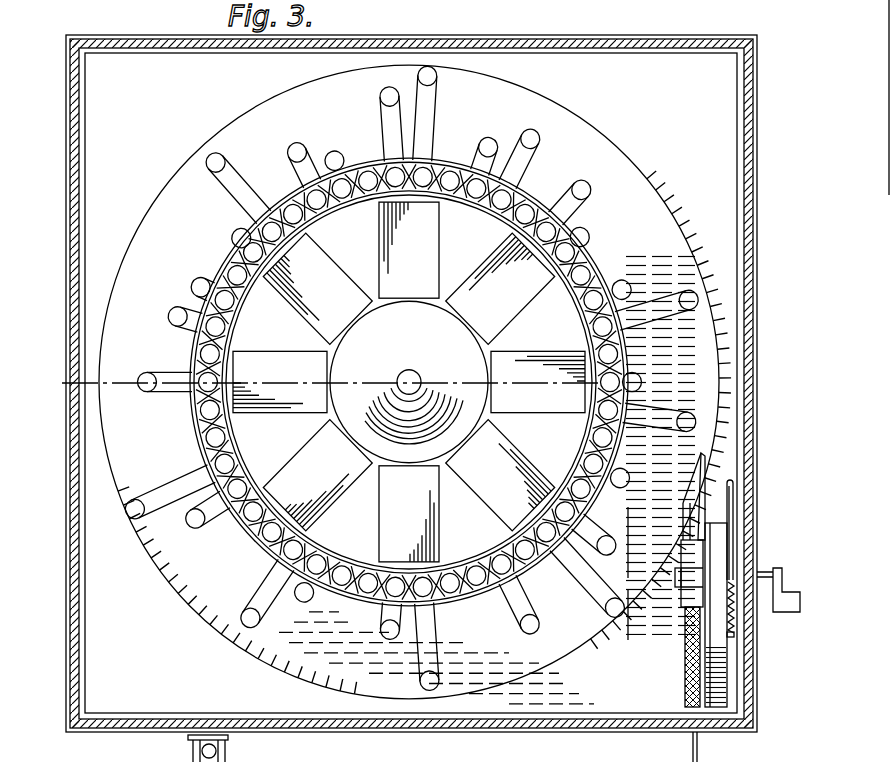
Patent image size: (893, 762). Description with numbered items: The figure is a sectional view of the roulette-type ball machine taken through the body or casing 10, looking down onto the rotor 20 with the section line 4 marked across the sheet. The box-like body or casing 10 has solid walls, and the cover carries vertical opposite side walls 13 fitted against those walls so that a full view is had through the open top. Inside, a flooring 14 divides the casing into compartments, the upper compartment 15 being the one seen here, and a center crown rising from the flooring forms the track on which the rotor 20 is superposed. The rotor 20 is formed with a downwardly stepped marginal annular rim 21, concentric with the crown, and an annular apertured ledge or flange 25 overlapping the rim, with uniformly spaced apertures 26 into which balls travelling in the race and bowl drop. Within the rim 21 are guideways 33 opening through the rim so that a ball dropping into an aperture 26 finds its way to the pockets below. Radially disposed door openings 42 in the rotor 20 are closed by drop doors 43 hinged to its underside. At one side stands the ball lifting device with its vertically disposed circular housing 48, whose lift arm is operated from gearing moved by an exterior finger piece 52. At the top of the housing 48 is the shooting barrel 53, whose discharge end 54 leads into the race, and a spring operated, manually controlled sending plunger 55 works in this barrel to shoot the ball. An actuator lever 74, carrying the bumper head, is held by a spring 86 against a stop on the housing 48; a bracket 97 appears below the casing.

The section line 4- 4 is at (786, 713).
The box like body or casing 10 is at (757, 132).
The vertical opposite side walls 13 is at (746, 277).
The flooring 14 is at (365, 658).
The upper compartment 15 is at (86, 673).
The rotor 20 is at (409, 381).
The marginal circular or annular rim 21 is at (412, 382).
The annular apertured ledge or flange 25 is at (409, 380).
The apertures 26 is at (399, 382).
The guideways 33 is at (411, 378).
The door openings 42 is at (413, 384).
The drop doors 43 is at (409, 382).
The circular housing 48 is at (715, 550).
The finger piece 52 is at (792, 603).
The shooting barrel 53 is at (688, 516).
The discharge end 54 is at (700, 468).
The sending plunger 55 is at (700, 753).
The actuator lever 74 is at (730, 493).
The spring 86 is at (735, 623).
The bracket 97 is at (240, 748).